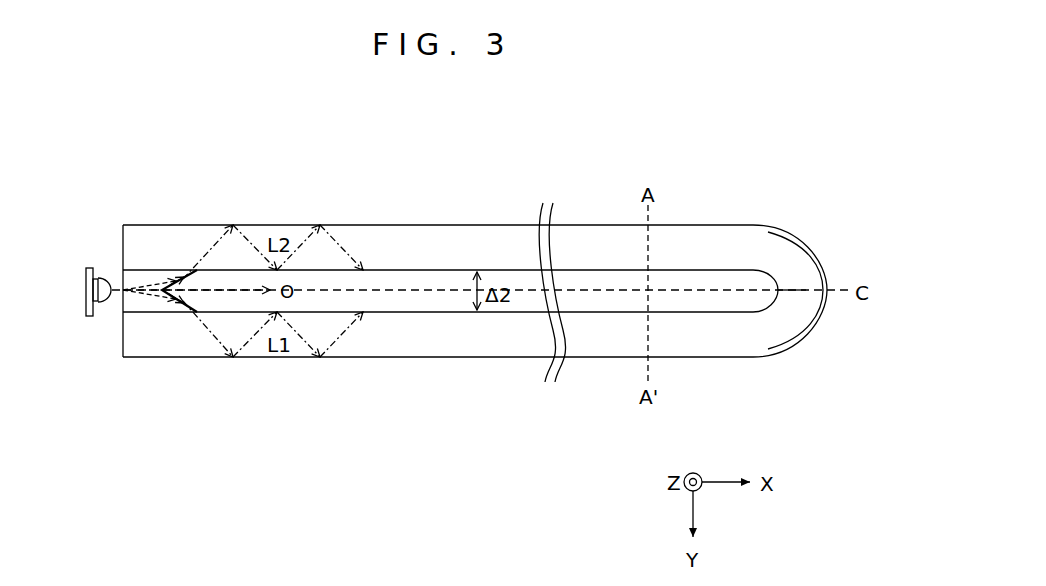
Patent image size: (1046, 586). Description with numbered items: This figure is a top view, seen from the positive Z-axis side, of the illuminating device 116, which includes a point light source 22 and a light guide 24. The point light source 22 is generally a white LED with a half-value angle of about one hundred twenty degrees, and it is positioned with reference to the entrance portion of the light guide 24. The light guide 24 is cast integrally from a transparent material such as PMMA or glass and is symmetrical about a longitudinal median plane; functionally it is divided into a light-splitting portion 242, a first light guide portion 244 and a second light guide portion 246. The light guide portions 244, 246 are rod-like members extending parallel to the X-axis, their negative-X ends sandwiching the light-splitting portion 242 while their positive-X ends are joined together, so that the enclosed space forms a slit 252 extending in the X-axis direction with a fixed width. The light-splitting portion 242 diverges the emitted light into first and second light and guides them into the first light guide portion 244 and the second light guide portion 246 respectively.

The point light source 22 is at (85, 294).
The light guide 24 is at (592, 206).
The illuminating device 116 is at (450, 212).
The light-splitting portion 242 is at (122, 280).
The first light guide portion 244 is at (372, 357).
The second light guide portion 246 is at (370, 225).
The slit 252 is at (446, 279).